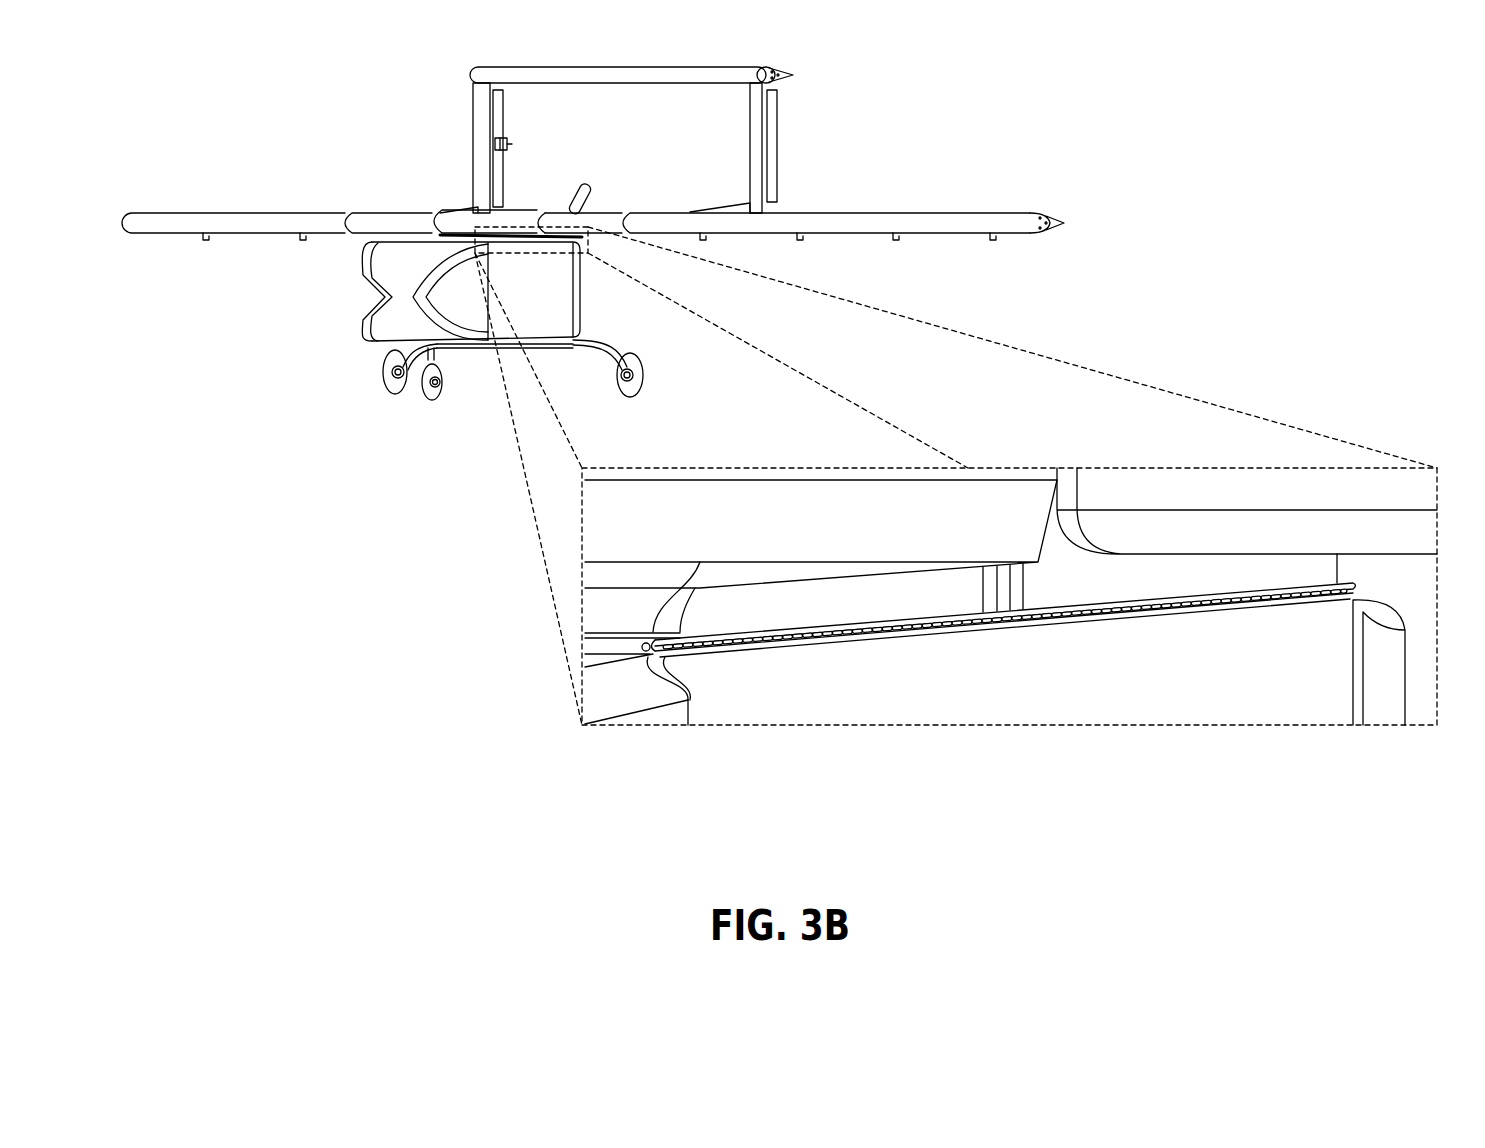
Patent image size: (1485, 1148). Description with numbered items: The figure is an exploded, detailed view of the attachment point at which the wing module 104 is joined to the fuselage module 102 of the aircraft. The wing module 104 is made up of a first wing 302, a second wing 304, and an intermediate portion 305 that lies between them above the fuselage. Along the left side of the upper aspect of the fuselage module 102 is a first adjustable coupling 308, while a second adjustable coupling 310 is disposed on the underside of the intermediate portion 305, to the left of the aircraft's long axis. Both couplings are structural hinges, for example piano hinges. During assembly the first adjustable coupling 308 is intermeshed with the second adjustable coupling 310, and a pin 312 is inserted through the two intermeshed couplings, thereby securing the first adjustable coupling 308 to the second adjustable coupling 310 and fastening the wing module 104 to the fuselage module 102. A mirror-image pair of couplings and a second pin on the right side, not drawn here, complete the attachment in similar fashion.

The fuselage module 102 is at (607, 705).
The wing module 104 is at (1155, 481).
The first wing 302 is at (892, 212).
The second wing 304 is at (280, 212).
The intermediate portion 305 is at (520, 212).
The first adjustable coupling 308 is at (707, 655).
The second adjustable coupling 310 is at (701, 560).
The pin 312 is at (682, 704).